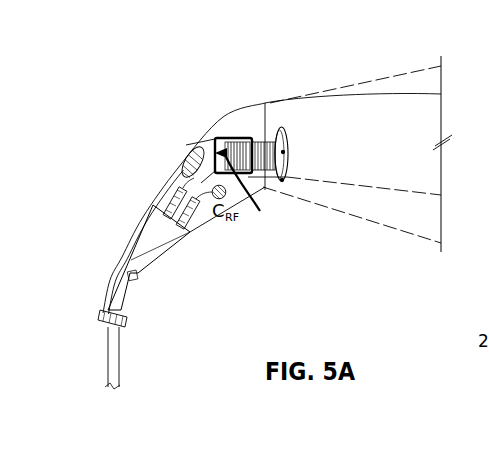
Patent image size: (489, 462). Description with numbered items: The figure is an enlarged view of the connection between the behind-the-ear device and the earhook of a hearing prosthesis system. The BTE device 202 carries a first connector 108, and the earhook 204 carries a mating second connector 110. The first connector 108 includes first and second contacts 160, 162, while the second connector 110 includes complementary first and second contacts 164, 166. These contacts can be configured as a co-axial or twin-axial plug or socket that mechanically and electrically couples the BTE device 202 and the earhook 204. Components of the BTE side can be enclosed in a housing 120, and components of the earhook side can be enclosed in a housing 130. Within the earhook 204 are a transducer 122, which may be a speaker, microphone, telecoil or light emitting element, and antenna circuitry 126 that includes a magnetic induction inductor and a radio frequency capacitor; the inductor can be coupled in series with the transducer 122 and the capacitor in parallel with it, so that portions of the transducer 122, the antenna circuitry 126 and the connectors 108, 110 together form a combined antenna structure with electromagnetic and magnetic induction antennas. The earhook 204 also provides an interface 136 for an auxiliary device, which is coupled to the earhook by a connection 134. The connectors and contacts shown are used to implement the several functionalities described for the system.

The first connector 108 is at (280, 128).
The second connector 110 is at (233, 138).
The housing 120 is at (407, 232).
The transducer 122 is at (153, 206).
The antenna circuitry 126 is at (188, 128).
The housing 130 is at (182, 232).
The connection 134 is at (119, 353).
The interface 136 is at (137, 275).
The first contact 160 is at (283, 152).
The second contact 162 is at (282, 180).
The first contact 164 is at (255, 189).
The second contact 166 is at (216, 139).
The BTE device 202 is at (375, 220).
The earhook 204 is at (120, 257).